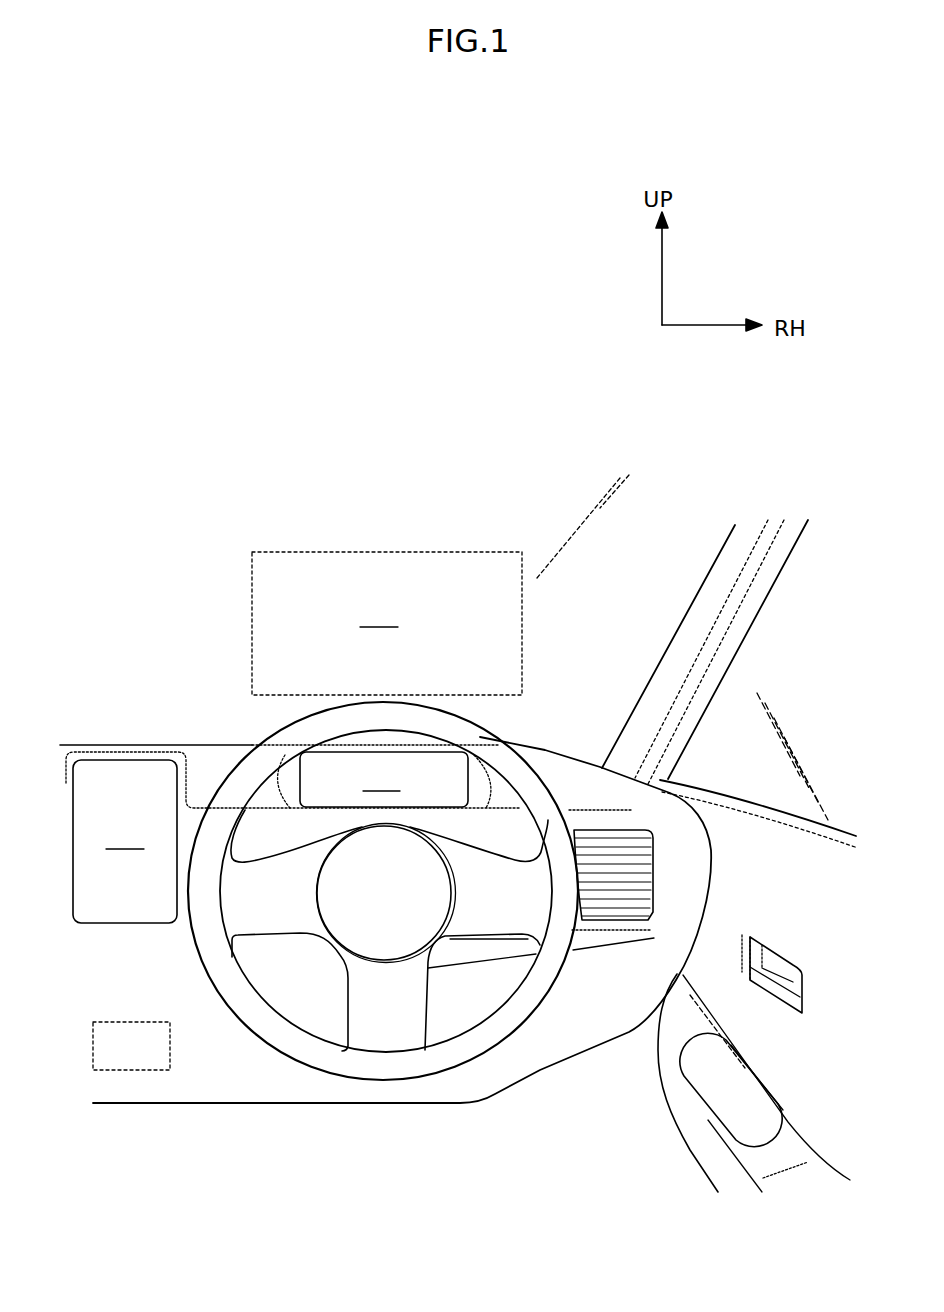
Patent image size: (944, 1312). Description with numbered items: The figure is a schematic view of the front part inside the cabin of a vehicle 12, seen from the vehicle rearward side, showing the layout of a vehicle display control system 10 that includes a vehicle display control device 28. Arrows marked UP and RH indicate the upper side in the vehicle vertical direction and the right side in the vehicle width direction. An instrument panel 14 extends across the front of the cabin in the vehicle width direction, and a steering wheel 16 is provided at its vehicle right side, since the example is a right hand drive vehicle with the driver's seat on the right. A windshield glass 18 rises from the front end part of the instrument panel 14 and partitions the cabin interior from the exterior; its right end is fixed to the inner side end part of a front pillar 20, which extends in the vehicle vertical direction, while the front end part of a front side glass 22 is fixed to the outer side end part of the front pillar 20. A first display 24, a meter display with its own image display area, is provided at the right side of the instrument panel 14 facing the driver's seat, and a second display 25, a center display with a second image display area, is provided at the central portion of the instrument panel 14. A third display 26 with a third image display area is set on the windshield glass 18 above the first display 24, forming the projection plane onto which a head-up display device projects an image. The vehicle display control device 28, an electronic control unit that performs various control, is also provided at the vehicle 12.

The vehicle display control system 10 is at (334, 520).
The vehicle 12 is at (372, 426).
The instrument panel 14 is at (562, 1058).
The steering wheel 16 is at (542, 778).
The windshield glass 18 is at (648, 621).
The front pillar 20 is at (716, 565).
The front side glass 22 is at (827, 780).
The first display 24 is at (328, 770).
The second display 25 is at (127, 905).
The third display 26 is at (386, 551).
The vehicle display control device 28 is at (123, 1072).